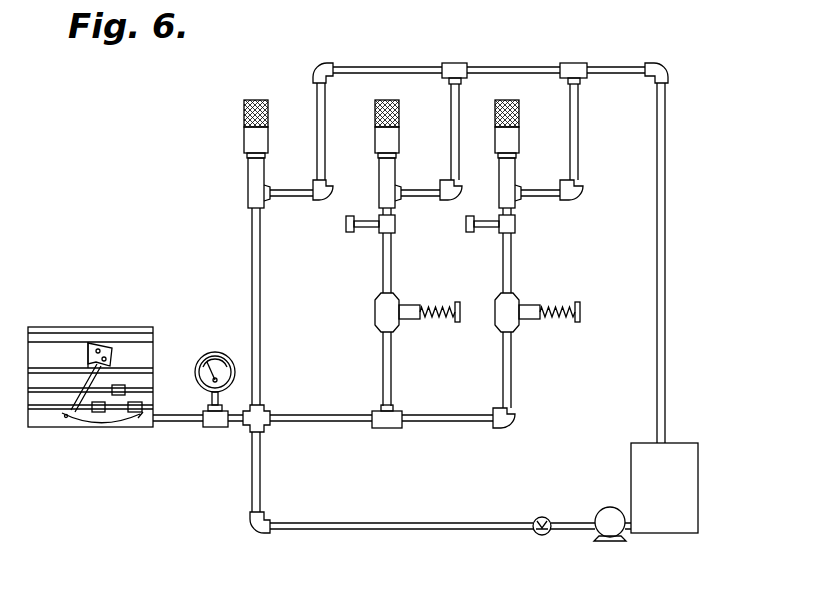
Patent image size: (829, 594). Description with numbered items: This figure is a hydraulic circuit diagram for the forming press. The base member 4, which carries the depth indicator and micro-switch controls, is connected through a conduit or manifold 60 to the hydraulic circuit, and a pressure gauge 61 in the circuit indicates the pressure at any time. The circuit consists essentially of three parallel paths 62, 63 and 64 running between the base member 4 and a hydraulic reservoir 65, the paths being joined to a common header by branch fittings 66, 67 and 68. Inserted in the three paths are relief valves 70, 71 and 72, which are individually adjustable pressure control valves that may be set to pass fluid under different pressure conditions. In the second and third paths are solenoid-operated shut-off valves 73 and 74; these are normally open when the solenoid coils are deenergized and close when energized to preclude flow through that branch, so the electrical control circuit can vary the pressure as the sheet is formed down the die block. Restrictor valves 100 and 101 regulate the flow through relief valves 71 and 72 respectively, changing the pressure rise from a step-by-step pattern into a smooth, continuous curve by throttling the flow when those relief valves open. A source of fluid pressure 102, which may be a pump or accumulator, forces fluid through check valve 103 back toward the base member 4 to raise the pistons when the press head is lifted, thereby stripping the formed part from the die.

The base member 4 is at (164, 341).
The conduit or manifold 60 is at (182, 423).
The pressure gauge 61 is at (206, 380).
The parallel path 62 is at (258, 316).
The parallel path 63 is at (392, 272).
The parallel path 64 is at (512, 272).
The hydraulic reservoir 65 is at (683, 463).
The branch conduit 66 is at (303, 200).
The branch conduit 67 is at (436, 190).
The branch conduit 68 is at (555, 190).
The relief valve 70 is at (256, 141).
The relief valve 71 is at (395, 137).
The relief valve 72 is at (515, 137).
The solenoid-operated shut-off valve 73 is at (383, 320).
The solenoid-operated shut-off valve 74 is at (503, 320).
The restrictor valve 100 is at (395, 224).
The restrictor valve 101 is at (515, 224).
The source of fluid pressure 102 is at (608, 537).
The check valve 103 is at (534, 534).